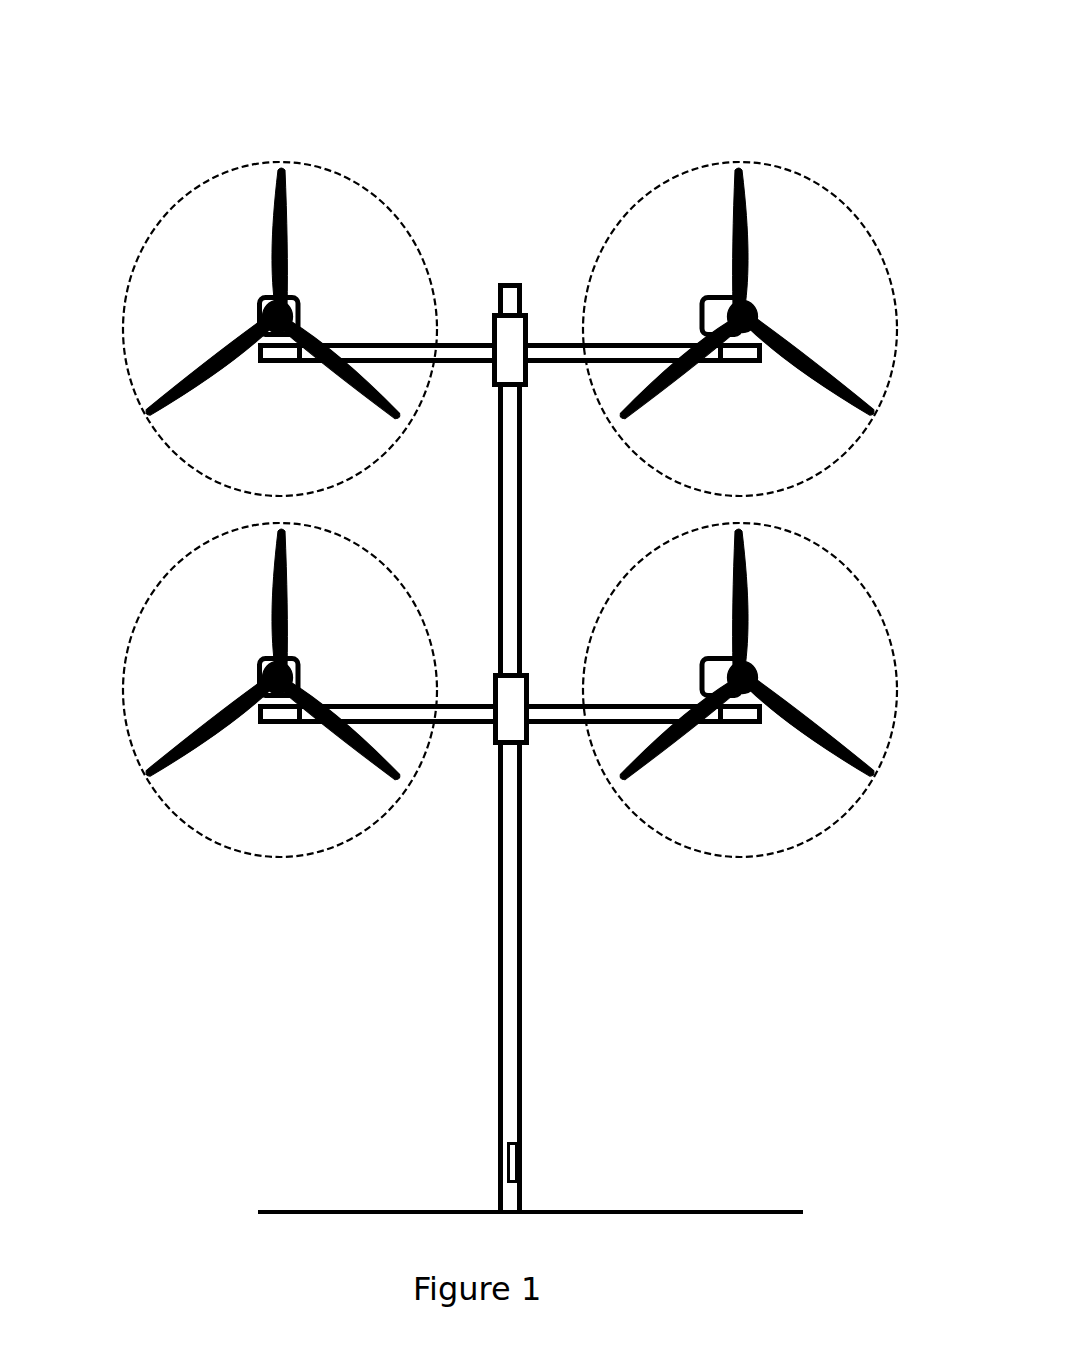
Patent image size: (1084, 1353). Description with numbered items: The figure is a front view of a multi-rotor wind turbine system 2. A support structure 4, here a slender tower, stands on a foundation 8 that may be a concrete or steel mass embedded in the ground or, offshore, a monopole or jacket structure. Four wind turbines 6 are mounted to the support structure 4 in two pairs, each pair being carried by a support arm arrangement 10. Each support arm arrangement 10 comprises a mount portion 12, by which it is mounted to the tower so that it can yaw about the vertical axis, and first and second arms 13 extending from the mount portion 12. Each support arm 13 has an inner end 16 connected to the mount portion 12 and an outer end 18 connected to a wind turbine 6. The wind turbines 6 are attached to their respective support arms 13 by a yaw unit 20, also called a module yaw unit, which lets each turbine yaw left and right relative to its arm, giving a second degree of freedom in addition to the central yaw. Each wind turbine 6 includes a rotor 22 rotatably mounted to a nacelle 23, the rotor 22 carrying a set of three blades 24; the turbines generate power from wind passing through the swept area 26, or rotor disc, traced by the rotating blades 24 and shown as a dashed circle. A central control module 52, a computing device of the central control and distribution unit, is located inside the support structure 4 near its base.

The wind turbine system 2 is at (591, 74).
The support structure 4 is at (523, 1065).
The wind turbine 6 is at (152, 201).
The foundation 8 is at (287, 1208).
The support arm arrangement 10 is at (496, 251).
The mount portion 12 is at (513, 364).
The support arm 13 is at (471, 343).
The inner end 16 is at (490, 388).
The outer end 18 is at (260, 362).
The yaw unit 20 is at (284, 362).
The rotor 22 is at (291, 297).
The nacelle 23 is at (259, 296).
The blade 24 is at (336, 329).
The swept area 26 is at (322, 170).
The central control module 52 is at (518, 1165).